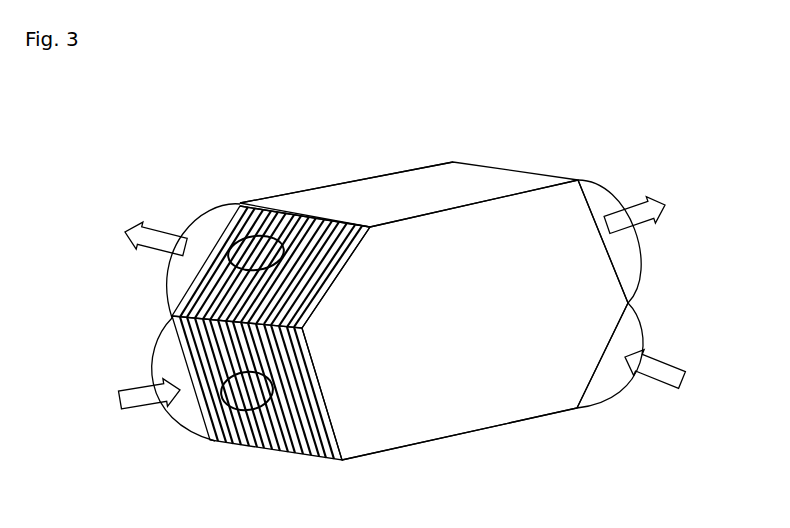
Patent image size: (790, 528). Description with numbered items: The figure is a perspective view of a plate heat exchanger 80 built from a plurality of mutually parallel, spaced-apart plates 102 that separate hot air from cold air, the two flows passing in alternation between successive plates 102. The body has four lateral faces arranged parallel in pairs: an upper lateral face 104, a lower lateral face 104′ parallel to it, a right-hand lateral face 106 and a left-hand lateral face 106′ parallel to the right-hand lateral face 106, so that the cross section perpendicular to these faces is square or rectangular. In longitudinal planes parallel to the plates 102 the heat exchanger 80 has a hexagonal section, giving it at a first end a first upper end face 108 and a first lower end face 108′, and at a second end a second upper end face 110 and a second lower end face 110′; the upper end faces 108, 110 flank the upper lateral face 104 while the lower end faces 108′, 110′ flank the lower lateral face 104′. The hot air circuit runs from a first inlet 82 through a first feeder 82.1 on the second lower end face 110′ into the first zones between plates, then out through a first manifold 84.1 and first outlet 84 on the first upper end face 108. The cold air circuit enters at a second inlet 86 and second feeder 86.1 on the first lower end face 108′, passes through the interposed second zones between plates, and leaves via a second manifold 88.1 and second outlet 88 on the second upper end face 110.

The heat exchanger 80 is at (256, 159).
The first inlet 82 is at (681, 349).
The first feeder 82.1 is at (618, 386).
The first outlet 84 is at (156, 201).
The first manifold 84.1 is at (147, 261).
The second inlet 86 is at (125, 419).
The second feeder 86.1 is at (135, 379).
The second outlet 88 is at (634, 169).
The second manifold 88.1 is at (661, 241).
The plates 102 is at (347, 217).
The upper lateral face 104 is at (409, 176).
The lower lateral face 104′ is at (459, 456).
The right-hand lateral face 106 is at (465, 326).
The left-hand lateral face 106′ is at (346, 164).
The first upper end face 108 is at (281, 267).
The first lower end face 108′ is at (289, 388).
The second upper end face 110 is at (571, 241).
The second lower end face 110′ is at (593, 355).